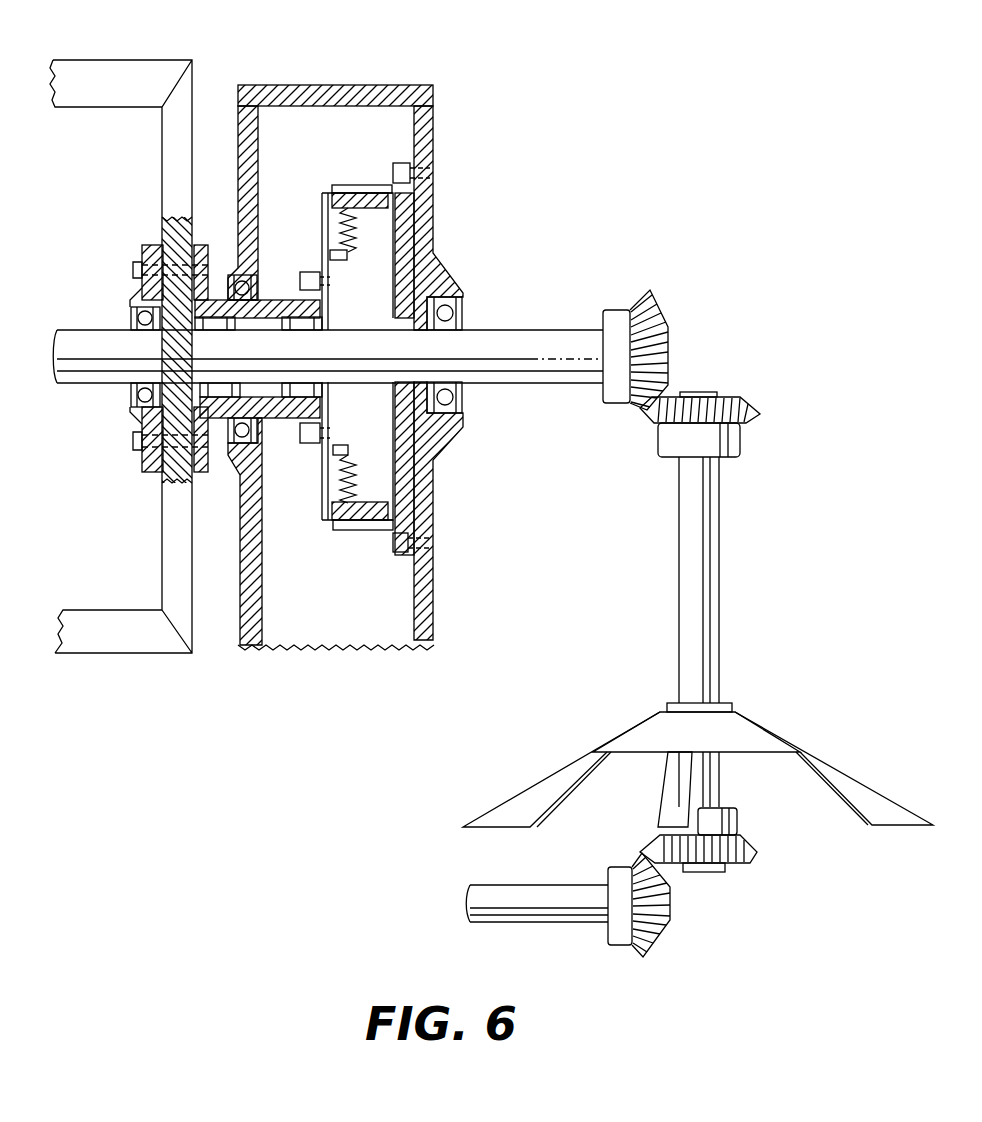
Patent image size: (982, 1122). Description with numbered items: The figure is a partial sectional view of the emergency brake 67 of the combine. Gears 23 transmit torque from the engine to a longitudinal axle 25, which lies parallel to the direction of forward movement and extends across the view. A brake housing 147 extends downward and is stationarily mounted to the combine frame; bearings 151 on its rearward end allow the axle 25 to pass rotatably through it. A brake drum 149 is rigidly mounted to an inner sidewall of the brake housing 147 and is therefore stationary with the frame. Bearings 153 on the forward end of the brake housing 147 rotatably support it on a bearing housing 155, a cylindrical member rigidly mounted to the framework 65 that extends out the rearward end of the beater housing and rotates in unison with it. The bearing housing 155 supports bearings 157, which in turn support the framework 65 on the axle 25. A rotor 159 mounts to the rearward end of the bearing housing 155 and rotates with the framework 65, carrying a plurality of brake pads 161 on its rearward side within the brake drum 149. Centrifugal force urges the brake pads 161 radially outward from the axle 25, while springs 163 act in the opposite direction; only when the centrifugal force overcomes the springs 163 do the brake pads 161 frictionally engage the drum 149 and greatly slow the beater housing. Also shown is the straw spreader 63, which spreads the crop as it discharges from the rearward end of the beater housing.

The gears 23 is at (665, 920).
The longitudinal axle 25 is at (540, 335).
The straw spreader 63 is at (833, 772).
The framework 65 is at (143, 68).
The brake 67 is at (412, 85).
The brake housing 147 is at (425, 190).
The brake drum 149 is at (400, 165).
The bearings 151 is at (462, 306).
The bearings 153 is at (252, 292).
The bearing housing 155 is at (274, 415).
The bearings 157 is at (150, 410).
The rotor 159 is at (315, 196).
The brake pads 161 is at (356, 193).
The springs 163 is at (355, 232).